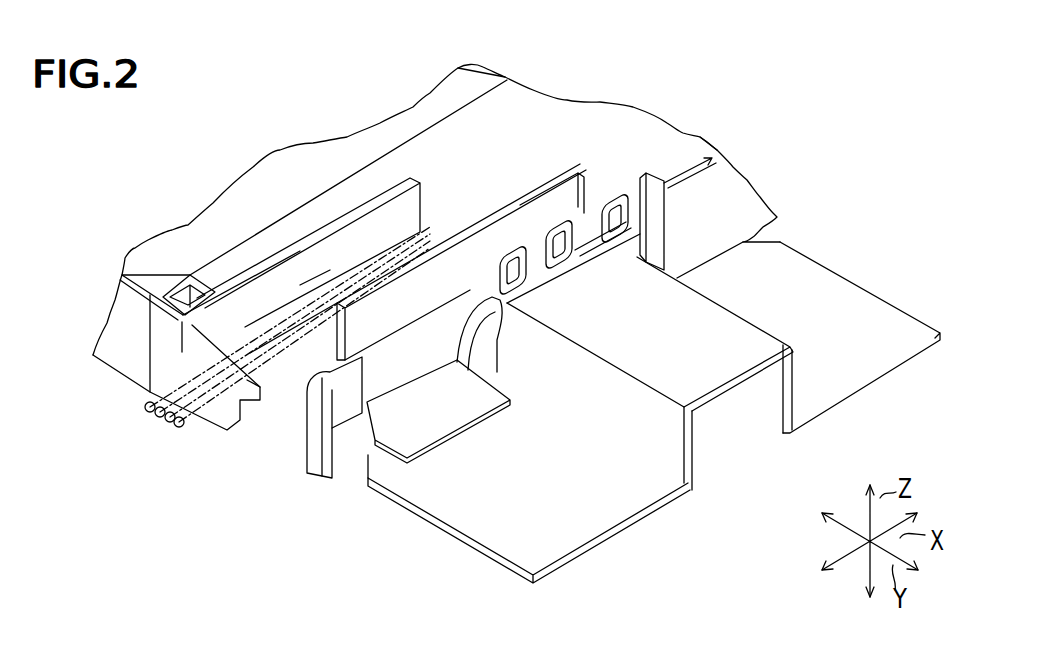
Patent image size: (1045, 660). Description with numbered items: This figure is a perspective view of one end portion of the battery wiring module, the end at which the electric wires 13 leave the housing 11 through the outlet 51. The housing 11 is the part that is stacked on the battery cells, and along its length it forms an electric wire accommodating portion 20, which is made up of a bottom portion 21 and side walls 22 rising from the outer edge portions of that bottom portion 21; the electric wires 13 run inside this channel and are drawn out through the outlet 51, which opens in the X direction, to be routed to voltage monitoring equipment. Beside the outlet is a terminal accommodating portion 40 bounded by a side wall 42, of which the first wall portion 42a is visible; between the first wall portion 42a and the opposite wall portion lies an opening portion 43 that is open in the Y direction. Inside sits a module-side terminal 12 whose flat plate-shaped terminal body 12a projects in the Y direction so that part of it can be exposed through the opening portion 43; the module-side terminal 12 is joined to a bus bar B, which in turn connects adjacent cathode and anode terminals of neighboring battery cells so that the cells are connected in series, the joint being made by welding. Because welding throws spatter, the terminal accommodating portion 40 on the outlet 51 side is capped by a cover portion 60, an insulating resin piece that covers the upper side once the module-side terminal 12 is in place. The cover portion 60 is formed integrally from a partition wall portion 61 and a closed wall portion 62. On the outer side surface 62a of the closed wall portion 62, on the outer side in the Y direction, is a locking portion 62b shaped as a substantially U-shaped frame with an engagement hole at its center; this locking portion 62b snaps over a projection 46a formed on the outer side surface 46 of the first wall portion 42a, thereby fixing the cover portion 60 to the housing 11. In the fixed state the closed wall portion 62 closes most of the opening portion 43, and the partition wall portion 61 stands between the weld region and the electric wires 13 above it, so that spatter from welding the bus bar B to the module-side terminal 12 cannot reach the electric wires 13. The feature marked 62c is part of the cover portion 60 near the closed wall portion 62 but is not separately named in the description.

The housing 11 is at (722, 177).
The module-side terminal 12 is at (485, 419).
The terminal body 12a is at (487, 400).
The electric wire 13 is at (190, 425).
The electric wire accommodating portion 20 is at (740, 213).
The bottom portion 21 is at (613, 112).
The side wall 22 is at (375, 205).
The terminal accommodating portion 40 is at (593, 207).
The side wall 42 is at (650, 356).
The first wall portion 42a is at (633, 222).
The opening portion 43 is at (366, 405).
The outer side surface 46 is at (615, 245).
The projection 46a is at (540, 260).
The outlet 51 is at (173, 355).
The cover portion 60 is at (490, 203).
The partition wall portion 61 is at (316, 305).
The closed wall portion 62 is at (418, 358).
The outer side surface 62a is at (570, 197).
The locking portion 62b is at (603, 233).
The terminal clip portion 62c is at (497, 276).
The bus bar B is at (853, 370).